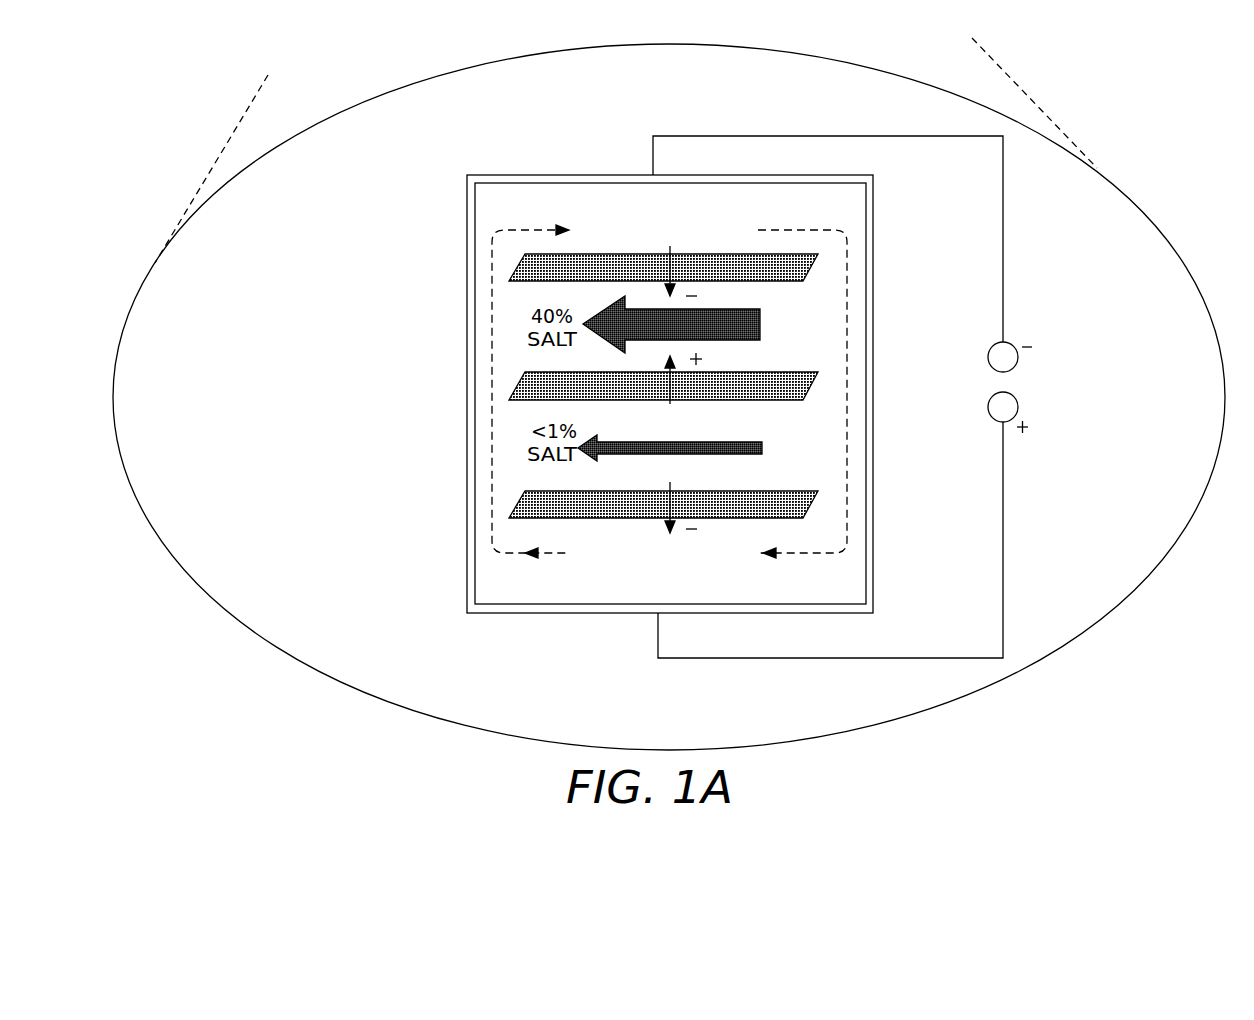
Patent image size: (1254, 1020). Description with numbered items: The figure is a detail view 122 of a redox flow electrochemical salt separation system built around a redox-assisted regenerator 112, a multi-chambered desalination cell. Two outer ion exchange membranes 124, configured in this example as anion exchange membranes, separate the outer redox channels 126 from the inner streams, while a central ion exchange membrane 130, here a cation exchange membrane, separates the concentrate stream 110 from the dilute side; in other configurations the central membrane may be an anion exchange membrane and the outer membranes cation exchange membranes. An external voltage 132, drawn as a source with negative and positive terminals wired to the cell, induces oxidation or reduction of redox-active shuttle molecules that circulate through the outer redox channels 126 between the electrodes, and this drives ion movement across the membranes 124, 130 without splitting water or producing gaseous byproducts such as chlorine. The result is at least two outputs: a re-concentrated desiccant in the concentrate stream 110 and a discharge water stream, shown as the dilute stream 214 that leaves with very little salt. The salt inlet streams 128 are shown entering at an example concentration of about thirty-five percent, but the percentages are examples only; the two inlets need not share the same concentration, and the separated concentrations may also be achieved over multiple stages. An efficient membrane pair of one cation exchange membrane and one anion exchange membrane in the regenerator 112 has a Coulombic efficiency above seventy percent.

The concentrate stream 110 is at (603, 307).
The redox-assisted regenerator 112 is at (600, 606).
The detail view 122 is at (297, 660).
The outer ion exchange membranes 124 is at (810, 268).
The outer redox channels 126 is at (822, 222).
The salt feed stream 128 is at (817, 326).
The central ion exchange membrane 130 is at (808, 392).
The external voltage 132 is at (1026, 382).
The desalinated product stream 214 is at (663, 440).